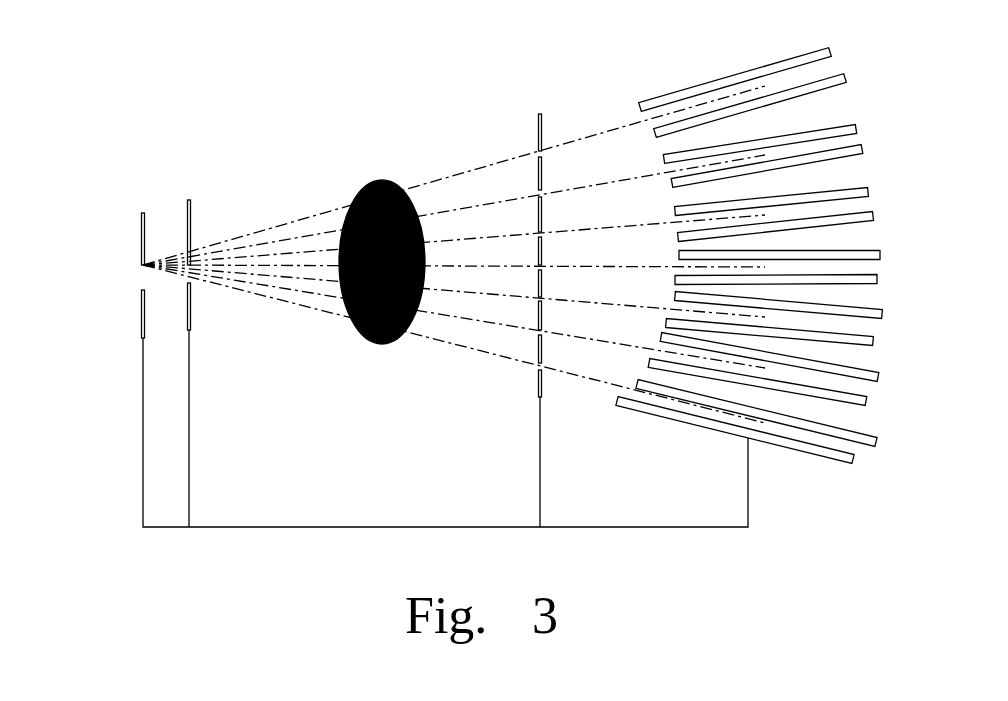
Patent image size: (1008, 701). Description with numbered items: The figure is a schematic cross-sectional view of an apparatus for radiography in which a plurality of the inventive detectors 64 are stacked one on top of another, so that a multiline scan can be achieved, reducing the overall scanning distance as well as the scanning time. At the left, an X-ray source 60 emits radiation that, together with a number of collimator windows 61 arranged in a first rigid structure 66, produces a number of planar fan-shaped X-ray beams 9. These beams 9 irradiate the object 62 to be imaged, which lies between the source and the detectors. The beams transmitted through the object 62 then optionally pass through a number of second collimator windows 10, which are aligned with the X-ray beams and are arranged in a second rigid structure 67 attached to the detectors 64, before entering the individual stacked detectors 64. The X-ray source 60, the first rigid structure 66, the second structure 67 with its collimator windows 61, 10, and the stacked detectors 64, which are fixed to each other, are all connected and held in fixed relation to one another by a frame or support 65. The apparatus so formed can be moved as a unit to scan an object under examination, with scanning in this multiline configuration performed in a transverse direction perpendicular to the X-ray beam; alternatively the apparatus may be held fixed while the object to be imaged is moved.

The planar fan-shaped X-ray beams 9 is at (454, 254).
The second collimator windows 10 is at (536, 306).
The X-ray source 60 is at (138, 273).
The collimator windows 61 is at (192, 262).
The object 62 is at (357, 278).
The detectors 64 is at (749, 253).
The frame or support 65 is at (445, 449).
The first rigid structure 66 is at (220, 244).
The second rigid structure 67 is at (575, 241).